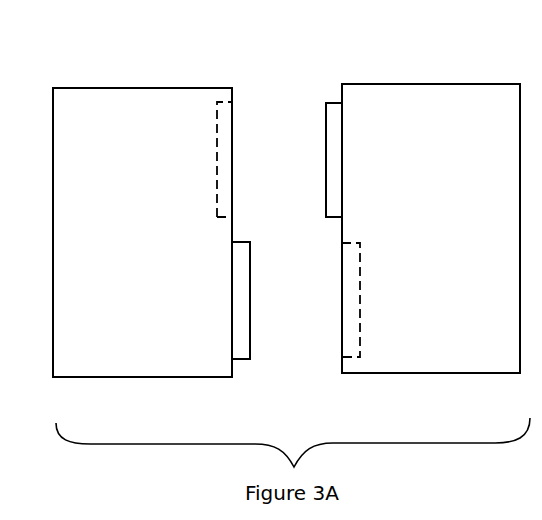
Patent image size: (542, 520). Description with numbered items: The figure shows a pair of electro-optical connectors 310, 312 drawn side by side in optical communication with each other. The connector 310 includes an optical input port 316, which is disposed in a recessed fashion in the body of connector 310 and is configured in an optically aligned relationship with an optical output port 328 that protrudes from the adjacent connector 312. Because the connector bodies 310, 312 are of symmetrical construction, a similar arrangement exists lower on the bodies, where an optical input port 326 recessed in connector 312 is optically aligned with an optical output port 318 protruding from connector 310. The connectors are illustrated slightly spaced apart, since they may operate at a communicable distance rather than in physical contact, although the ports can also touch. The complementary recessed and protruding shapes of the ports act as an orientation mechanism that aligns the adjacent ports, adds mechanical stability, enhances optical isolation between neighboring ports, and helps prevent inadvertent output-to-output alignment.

The electro-optical connector 310 is at (144, 88).
The electro-optical connector 312 is at (431, 84).
The optical input port 316 is at (216, 158).
The optical output port 318 is at (250, 300).
The optical input port 326 is at (360, 298).
The optical output port 328 is at (326, 158).